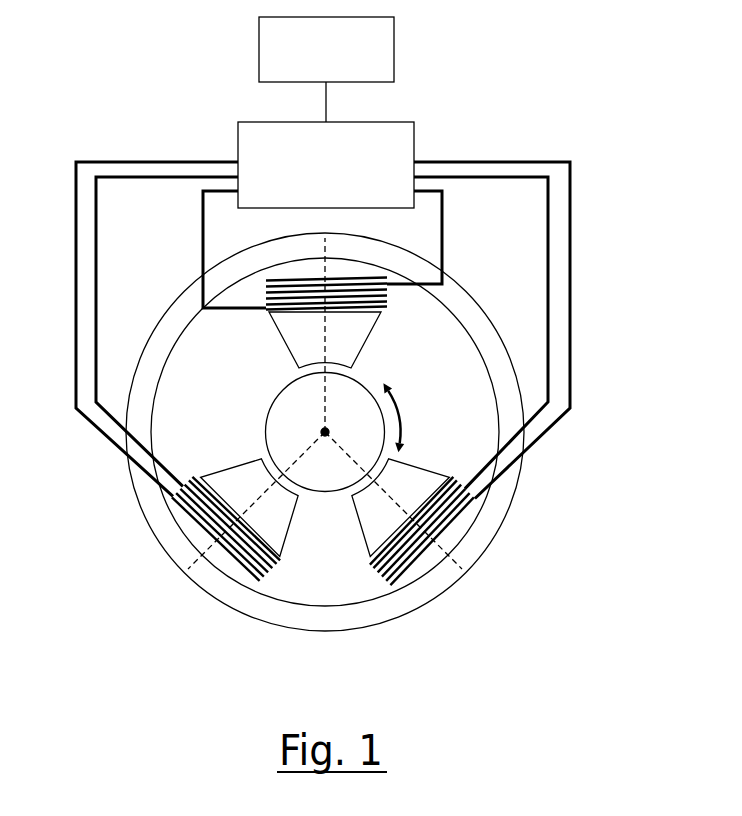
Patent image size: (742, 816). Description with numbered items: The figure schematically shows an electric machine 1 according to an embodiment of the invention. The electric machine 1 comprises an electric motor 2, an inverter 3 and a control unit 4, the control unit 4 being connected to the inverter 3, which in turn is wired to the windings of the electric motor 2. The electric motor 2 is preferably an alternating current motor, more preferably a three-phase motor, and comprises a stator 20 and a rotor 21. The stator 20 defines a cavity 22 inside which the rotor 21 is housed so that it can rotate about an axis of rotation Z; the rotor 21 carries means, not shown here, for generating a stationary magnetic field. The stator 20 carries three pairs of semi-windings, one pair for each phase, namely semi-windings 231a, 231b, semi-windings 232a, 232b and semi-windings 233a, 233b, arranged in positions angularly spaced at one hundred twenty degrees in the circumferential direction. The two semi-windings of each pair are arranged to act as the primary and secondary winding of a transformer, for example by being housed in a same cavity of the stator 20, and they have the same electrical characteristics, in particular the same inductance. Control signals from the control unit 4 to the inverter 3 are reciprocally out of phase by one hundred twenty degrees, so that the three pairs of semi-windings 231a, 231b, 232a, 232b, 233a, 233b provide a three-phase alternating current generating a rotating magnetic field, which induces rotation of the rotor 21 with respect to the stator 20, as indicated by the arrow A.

The electric machine 1 is at (672, 98).
The electric motor 2 is at (548, 577).
The inverter 3 is at (326, 165).
The control unit 4 is at (326, 49).
The stator 20 is at (255, 619).
The rotor 21 is at (370, 387).
The cavity 22 is at (350, 593).
The semi-winding 231a is at (382, 305).
The semi-winding 231b is at (268, 273).
The semi-winding 232a is at (466, 515).
The semi-winding 232b is at (446, 483).
The semi-winding 233a is at (192, 523).
The semi-winding 233b is at (200, 490).
The axis of rotation Z is at (325, 432).
The arrow A is at (410, 407).